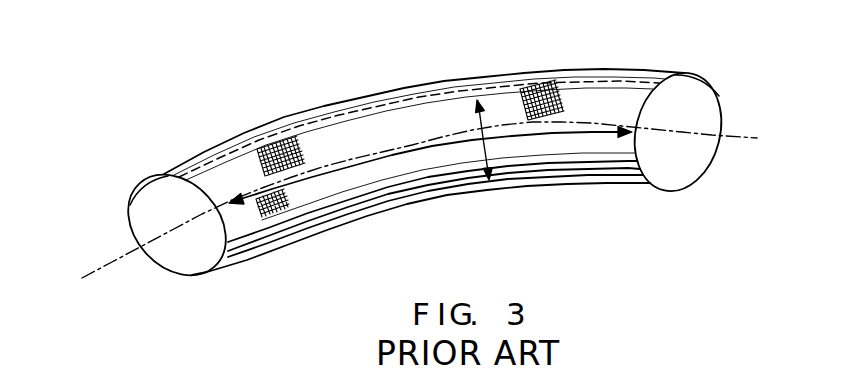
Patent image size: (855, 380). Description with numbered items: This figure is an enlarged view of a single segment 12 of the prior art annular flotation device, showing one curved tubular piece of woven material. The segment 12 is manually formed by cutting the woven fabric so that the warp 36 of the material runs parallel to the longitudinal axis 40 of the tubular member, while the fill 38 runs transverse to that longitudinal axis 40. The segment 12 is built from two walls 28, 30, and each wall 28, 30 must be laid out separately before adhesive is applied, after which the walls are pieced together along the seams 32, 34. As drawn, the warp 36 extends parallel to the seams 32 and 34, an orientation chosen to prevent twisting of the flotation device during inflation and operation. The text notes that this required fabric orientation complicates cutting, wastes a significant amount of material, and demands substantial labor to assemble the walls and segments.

The segment 12 is at (365, 98).
The wall 28 is at (238, 242).
The wall 30 is at (233, 178).
The seam 32 is at (300, 125).
The seam 34 is at (262, 222).
The warp 36 is at (587, 131).
The fill 38 is at (483, 108).
The longitudinal axis 40 is at (89, 273).